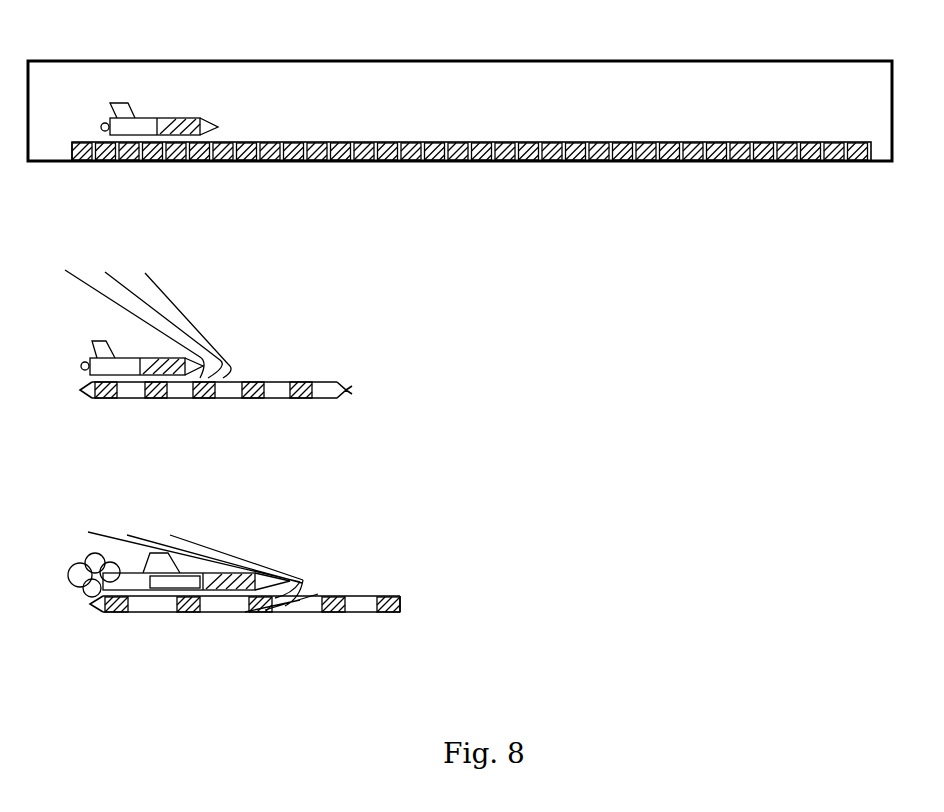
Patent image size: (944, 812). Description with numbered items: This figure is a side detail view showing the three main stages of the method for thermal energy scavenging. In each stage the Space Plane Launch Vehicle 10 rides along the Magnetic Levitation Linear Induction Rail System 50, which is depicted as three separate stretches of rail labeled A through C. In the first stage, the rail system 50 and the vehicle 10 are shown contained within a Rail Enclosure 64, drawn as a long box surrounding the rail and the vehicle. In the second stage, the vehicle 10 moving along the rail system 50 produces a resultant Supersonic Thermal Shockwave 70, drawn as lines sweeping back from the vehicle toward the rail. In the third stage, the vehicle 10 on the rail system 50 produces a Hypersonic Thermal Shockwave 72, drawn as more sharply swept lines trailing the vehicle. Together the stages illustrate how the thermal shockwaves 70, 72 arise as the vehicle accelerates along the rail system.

The rail enclosure 64 is at (552, 61).
The space plane launch vehicle 10 is at (105, 118).
The magnetic levitation linear induction rail system 50 is at (258, 162).
The supersonic thermal shockwave 70 is at (213, 348).
The hypersonic thermal shockwave 72 is at (277, 572).